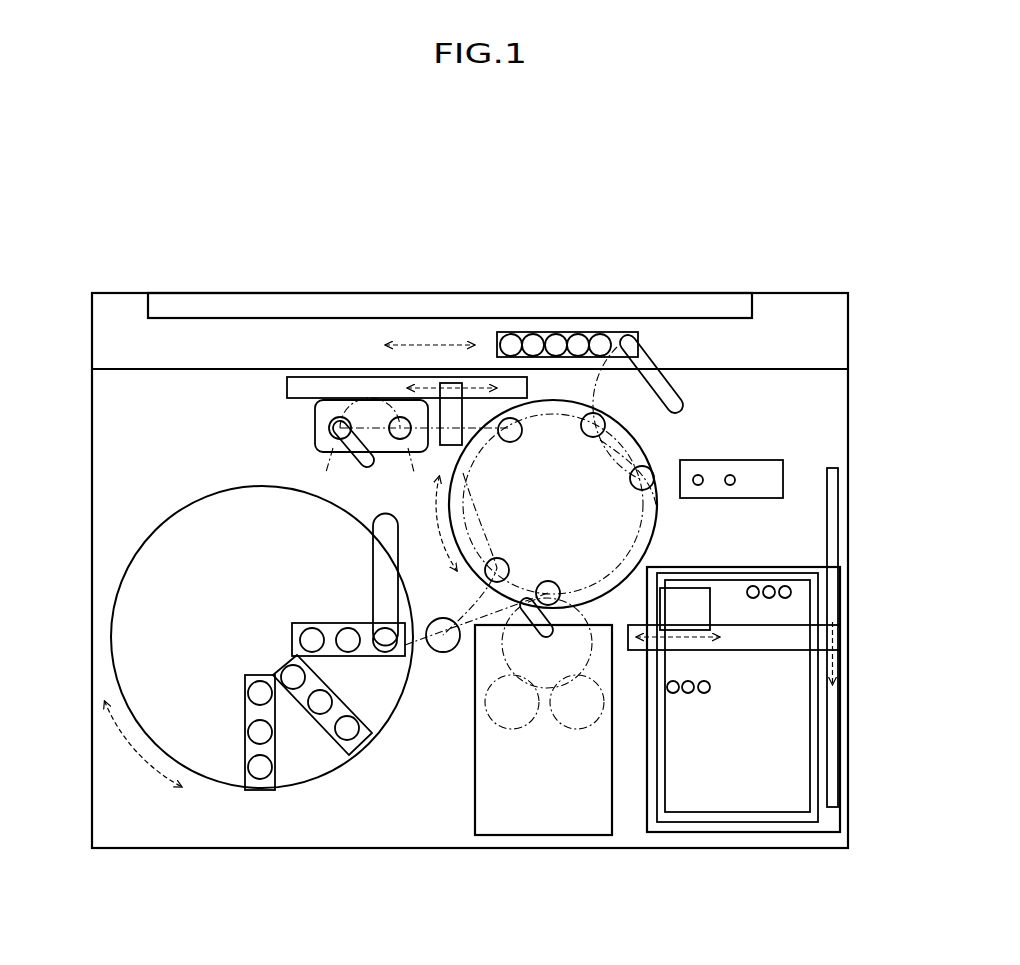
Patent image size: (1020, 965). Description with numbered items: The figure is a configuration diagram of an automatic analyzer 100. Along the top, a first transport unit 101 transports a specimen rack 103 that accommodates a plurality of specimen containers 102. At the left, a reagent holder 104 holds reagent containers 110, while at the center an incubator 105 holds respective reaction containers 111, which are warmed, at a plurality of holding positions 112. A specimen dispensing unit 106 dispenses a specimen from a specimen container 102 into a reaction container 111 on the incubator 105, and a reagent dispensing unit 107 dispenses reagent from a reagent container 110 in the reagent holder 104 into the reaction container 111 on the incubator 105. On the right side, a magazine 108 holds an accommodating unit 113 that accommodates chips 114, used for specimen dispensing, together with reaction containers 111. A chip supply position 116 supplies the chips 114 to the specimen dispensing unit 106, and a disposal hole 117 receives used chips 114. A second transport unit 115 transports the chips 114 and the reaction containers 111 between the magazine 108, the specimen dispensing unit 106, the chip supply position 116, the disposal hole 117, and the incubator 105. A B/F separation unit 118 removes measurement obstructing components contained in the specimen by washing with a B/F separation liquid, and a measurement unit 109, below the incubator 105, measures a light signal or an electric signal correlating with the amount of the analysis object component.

The automatic analyzer 100 is at (826, 196).
The first transport unit 101 is at (430, 338).
The specimen container 102 is at (512, 340).
The specimen rack 103 is at (542, 328).
The reagent holder 104 is at (140, 623).
The incubator 105 is at (645, 448).
The specimen dispensing unit 106 is at (652, 352).
The reagent dispensing unit 107 is at (395, 653).
The magazine 108 is at (822, 820).
The measurement unit 109 is at (553, 783).
The reagent container 110 is at (263, 783).
The reaction container 111 is at (703, 690).
The holding position 112 is at (655, 472).
The accommodating unit 113 is at (773, 745).
The chip 114 is at (793, 590).
The second transport unit 115 is at (680, 603).
The chip supply position 116 is at (735, 485).
The disposal hole 117 is at (703, 485).
The B/F separation unit 118 is at (318, 427).